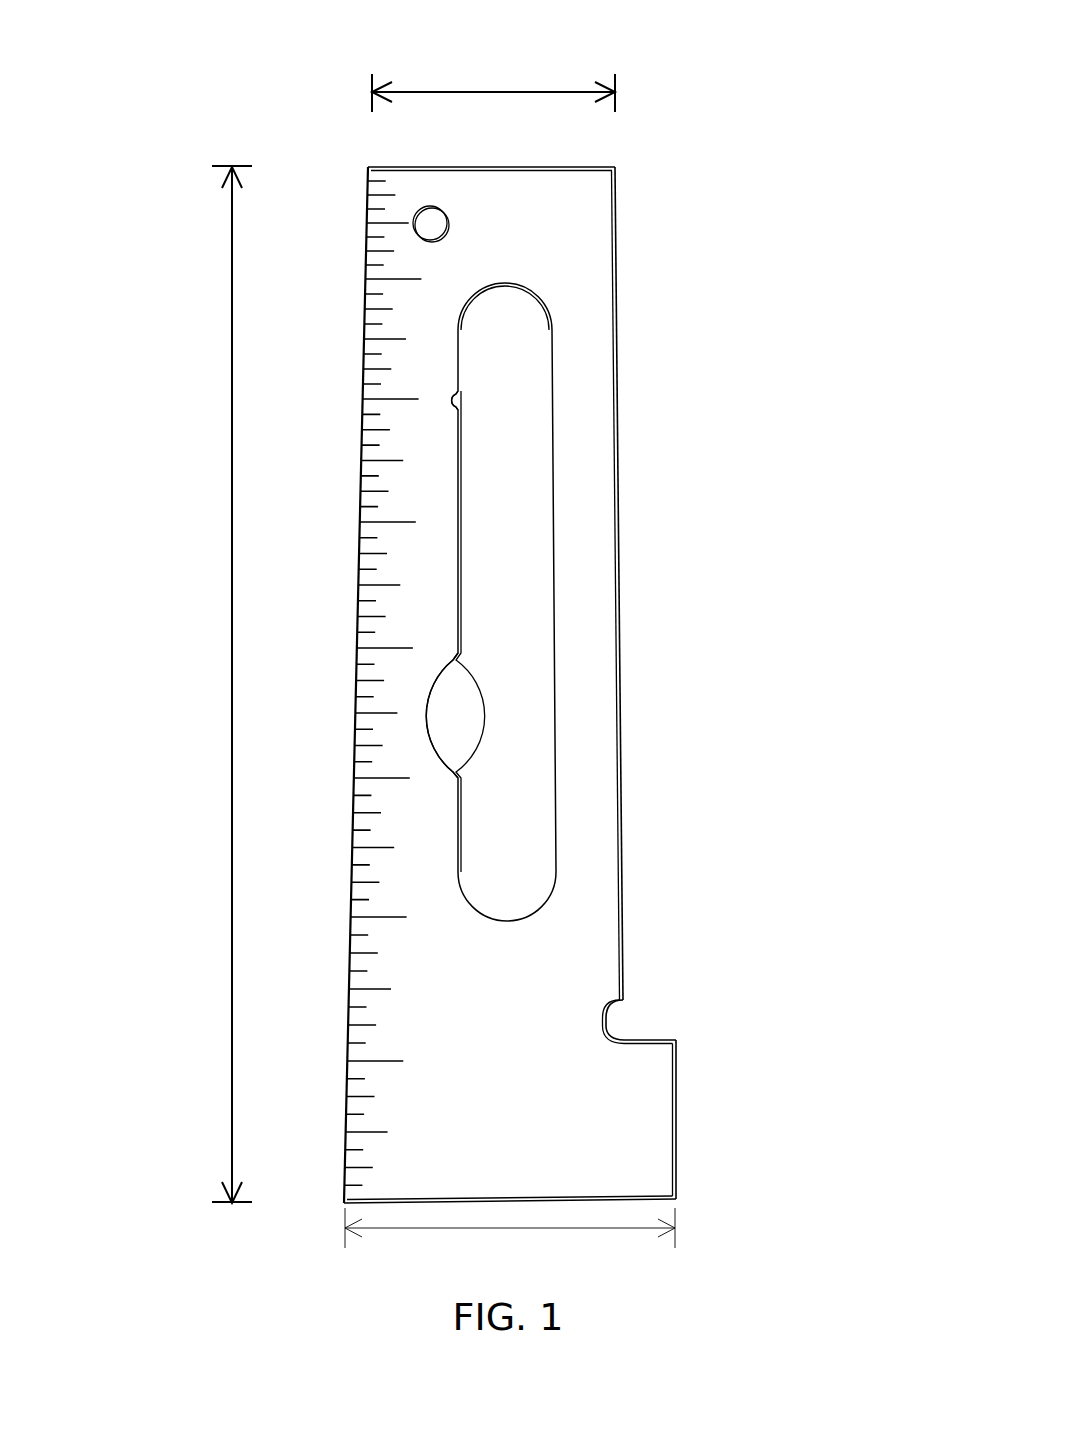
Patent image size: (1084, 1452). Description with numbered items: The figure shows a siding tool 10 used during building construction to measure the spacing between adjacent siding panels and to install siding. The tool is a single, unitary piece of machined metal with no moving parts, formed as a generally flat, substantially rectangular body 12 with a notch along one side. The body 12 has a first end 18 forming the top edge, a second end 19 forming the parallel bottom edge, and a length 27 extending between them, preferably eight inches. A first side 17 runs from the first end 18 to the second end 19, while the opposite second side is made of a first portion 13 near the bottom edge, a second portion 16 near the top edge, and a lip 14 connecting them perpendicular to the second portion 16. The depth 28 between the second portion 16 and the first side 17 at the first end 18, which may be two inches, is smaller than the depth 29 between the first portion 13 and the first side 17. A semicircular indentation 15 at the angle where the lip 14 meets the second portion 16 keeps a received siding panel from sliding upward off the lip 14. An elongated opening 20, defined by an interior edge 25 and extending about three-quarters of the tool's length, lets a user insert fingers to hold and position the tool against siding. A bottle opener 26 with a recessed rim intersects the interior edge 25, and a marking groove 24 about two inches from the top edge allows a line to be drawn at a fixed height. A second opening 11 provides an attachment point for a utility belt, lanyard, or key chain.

The siding tool 10 is at (334, 575).
The second opening 11 is at (416, 222).
The body 12 is at (420, 993).
The first portion 13 is at (676, 1112).
The lip 14 is at (672, 1038).
The semicircular indentation 15 is at (612, 1020).
The second portion 16 is at (622, 740).
The first side 17 is at (345, 1170).
The first end 18 is at (436, 167).
The second end 19 is at (628, 1198).
The elongated opening 20 is at (425, 602).
The marking groove 24 is at (455, 395).
The interior edge 25 is at (462, 598).
The bottle opener 26 is at (452, 716).
The length 27 is at (232, 760).
The depth 28 is at (512, 92).
The depth 29 is at (620, 1228).